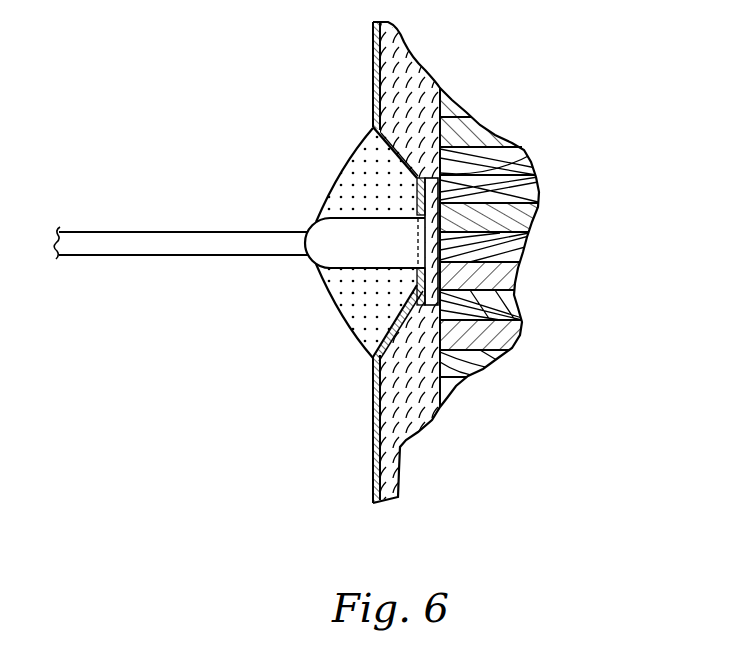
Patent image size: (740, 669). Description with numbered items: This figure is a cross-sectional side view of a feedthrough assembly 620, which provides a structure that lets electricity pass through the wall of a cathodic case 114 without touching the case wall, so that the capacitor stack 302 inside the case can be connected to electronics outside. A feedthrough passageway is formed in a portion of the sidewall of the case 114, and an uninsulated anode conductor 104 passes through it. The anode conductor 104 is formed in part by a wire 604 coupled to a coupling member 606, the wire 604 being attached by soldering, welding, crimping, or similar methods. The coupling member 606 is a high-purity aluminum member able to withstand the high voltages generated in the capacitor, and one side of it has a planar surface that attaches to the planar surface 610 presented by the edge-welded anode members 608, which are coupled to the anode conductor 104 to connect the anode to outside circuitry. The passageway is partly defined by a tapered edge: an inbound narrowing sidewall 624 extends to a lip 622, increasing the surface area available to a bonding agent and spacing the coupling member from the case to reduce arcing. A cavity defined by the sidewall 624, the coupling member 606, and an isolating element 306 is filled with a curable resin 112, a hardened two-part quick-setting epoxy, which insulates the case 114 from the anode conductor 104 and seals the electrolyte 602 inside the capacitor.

The feedthrough assembly 620 is at (142, 42).
The case 114 is at (373, 45).
The electrolyte 602 is at (404, 436).
The curable resin 112 is at (358, 178).
The isolating element 306 is at (384, 380).
The anode conductor 104 is at (305, 218).
The coupling member 606 is at (315, 263).
The wire 604 is at (94, 232).
The capacitor stack 302 is at (548, 147).
The anode members 608 is at (440, 101).
The inbound narrowing sidewall 624 is at (535, 187).
The lip 622 is at (505, 286).
The planar surface 610 is at (461, 377).